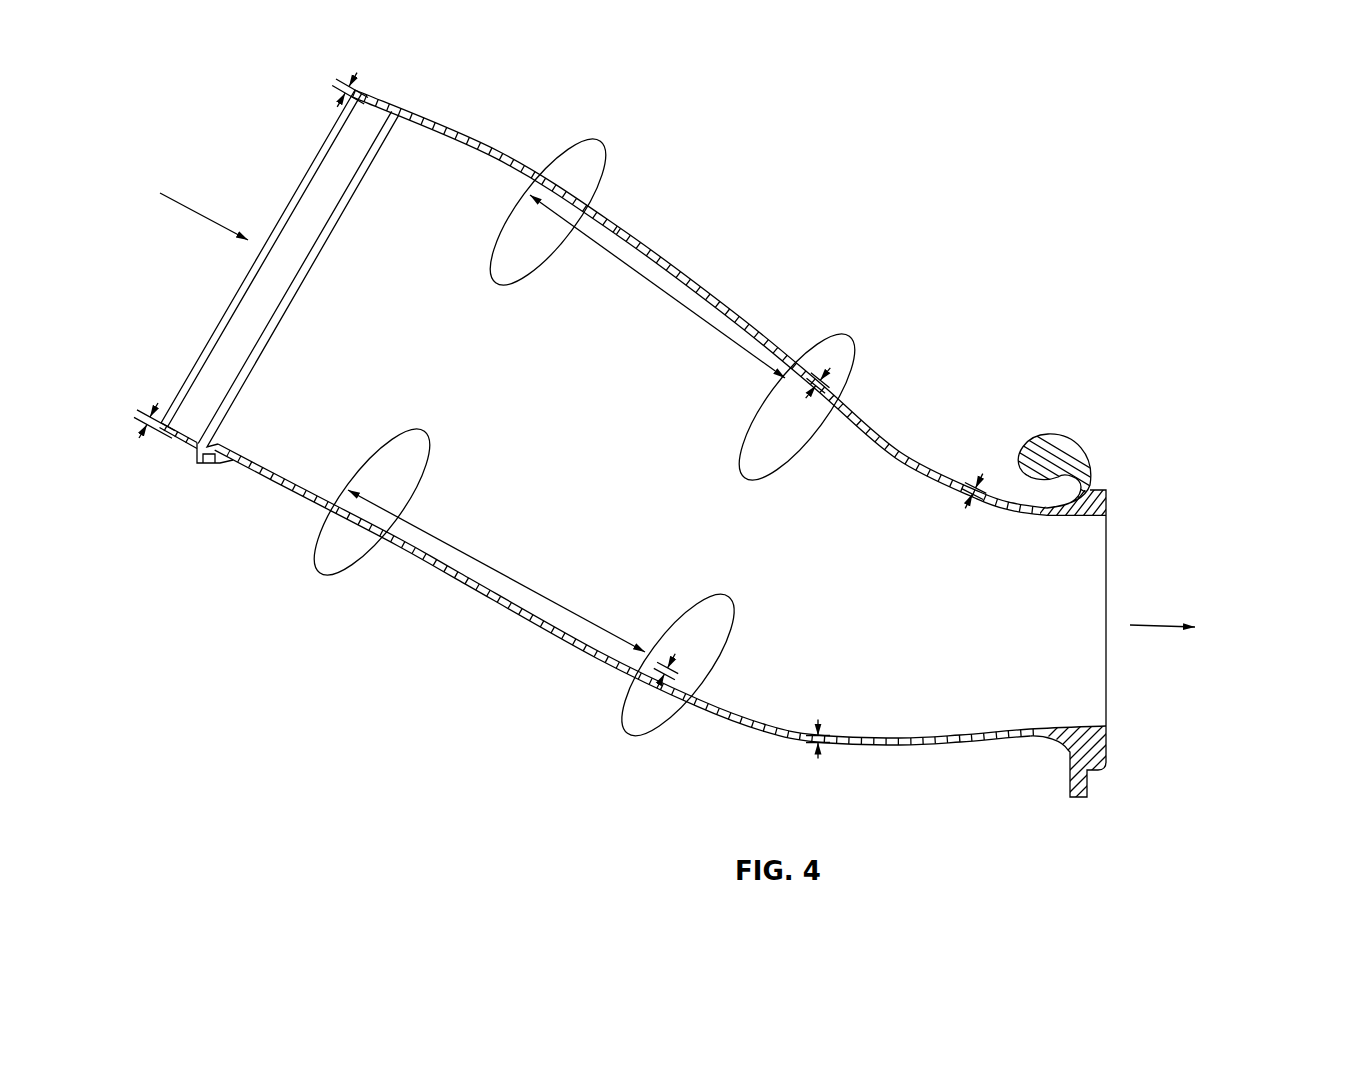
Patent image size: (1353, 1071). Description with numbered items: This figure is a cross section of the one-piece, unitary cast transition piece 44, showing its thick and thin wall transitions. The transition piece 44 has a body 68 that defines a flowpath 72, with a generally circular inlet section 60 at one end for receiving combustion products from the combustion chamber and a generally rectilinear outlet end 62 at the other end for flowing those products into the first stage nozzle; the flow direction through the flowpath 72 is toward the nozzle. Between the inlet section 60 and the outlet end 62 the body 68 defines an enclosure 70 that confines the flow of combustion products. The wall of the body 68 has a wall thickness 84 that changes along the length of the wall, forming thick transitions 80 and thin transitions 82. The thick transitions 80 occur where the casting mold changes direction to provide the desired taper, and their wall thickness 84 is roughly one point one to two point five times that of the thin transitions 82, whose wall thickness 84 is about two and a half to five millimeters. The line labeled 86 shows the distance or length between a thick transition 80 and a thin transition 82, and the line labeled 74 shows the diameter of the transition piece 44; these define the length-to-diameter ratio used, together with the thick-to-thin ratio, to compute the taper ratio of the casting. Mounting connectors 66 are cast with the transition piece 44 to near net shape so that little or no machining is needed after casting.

The transition piece 44 is at (888, 178).
The inlet section 60 is at (387, 94).
The outlet end 62 is at (1110, 500).
The mounting connectors 66 is at (1040, 432).
The body 68 is at (702, 282).
The enclosure 70 is at (1085, 710).
The flowpath 72 is at (183, 200).
The diameter 74 is at (250, 278).
The thick transitions 80 is at (604, 148).
The thin transitions 82 is at (848, 333).
The wall thickness 84 is at (342, 80).
The length 86 is at (655, 292).